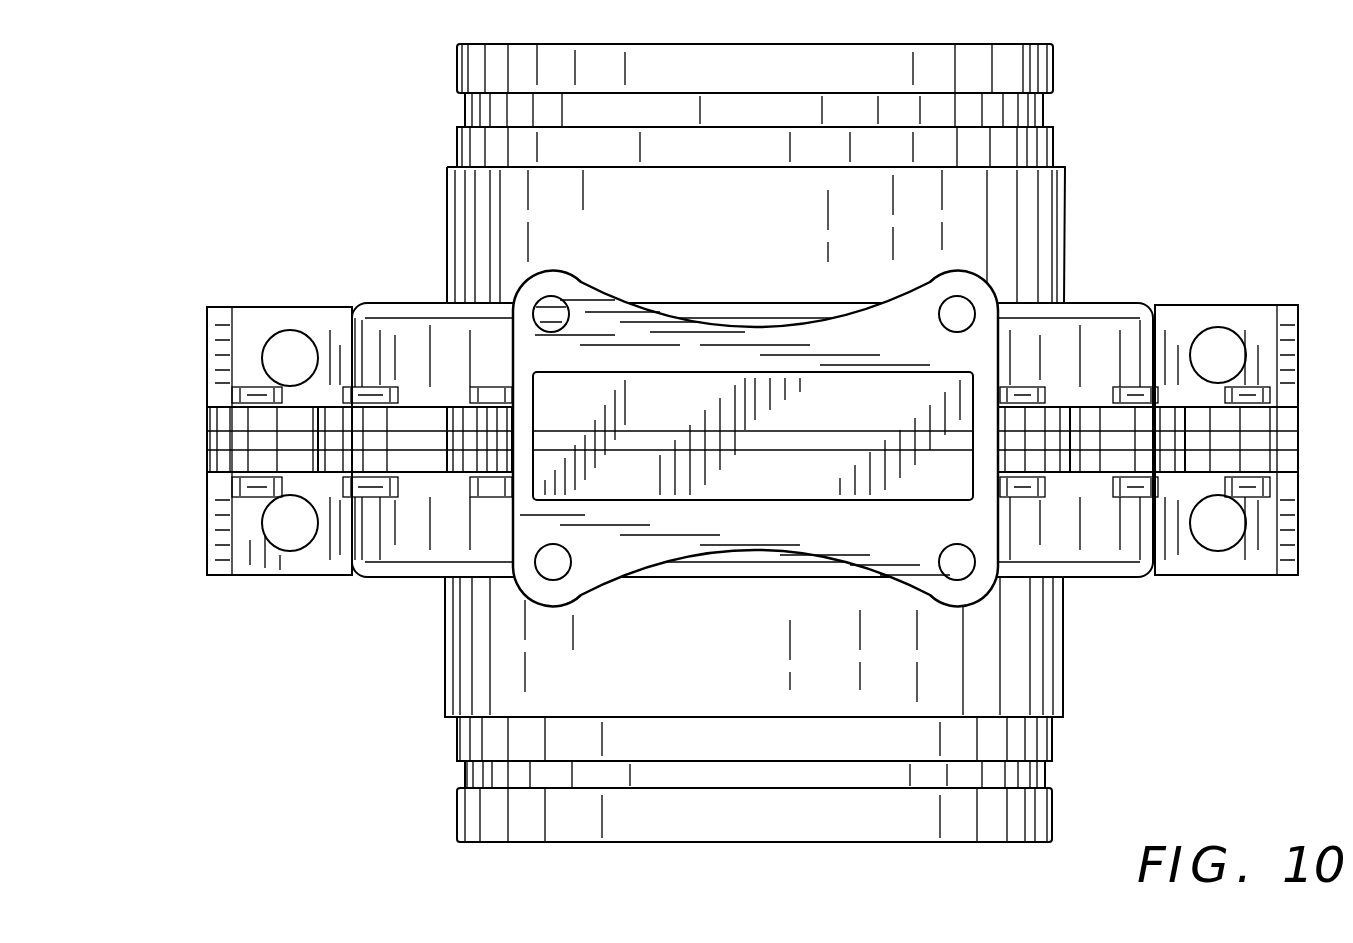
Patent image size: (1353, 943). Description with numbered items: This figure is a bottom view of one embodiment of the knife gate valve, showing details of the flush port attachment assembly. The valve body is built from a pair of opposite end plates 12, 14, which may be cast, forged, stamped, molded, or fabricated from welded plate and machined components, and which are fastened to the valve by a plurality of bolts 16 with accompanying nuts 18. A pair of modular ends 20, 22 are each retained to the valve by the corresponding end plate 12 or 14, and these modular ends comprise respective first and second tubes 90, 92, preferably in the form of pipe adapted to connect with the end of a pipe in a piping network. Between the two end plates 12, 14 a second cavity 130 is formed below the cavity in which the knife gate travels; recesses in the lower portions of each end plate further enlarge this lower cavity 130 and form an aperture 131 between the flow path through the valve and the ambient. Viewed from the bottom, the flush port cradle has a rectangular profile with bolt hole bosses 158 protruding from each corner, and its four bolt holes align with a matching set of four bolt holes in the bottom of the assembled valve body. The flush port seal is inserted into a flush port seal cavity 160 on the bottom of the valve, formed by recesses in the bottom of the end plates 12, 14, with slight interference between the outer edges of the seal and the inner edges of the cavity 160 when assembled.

The end plate 12 is at (378, 337).
The end plate 14 is at (378, 548).
The bolt 16 is at (258, 392).
The nut 18 is at (243, 497).
The modular end 20 is at (468, 62).
The modular end 22 is at (470, 817).
The first tube 90 is at (1053, 58).
The second tube 92 is at (1048, 810).
The second cavity 130 is at (761, 435).
The aperture 131 is at (922, 440).
The bolt hole boss 158 is at (525, 290).
The flush port seal cavity 160 is at (693, 390).